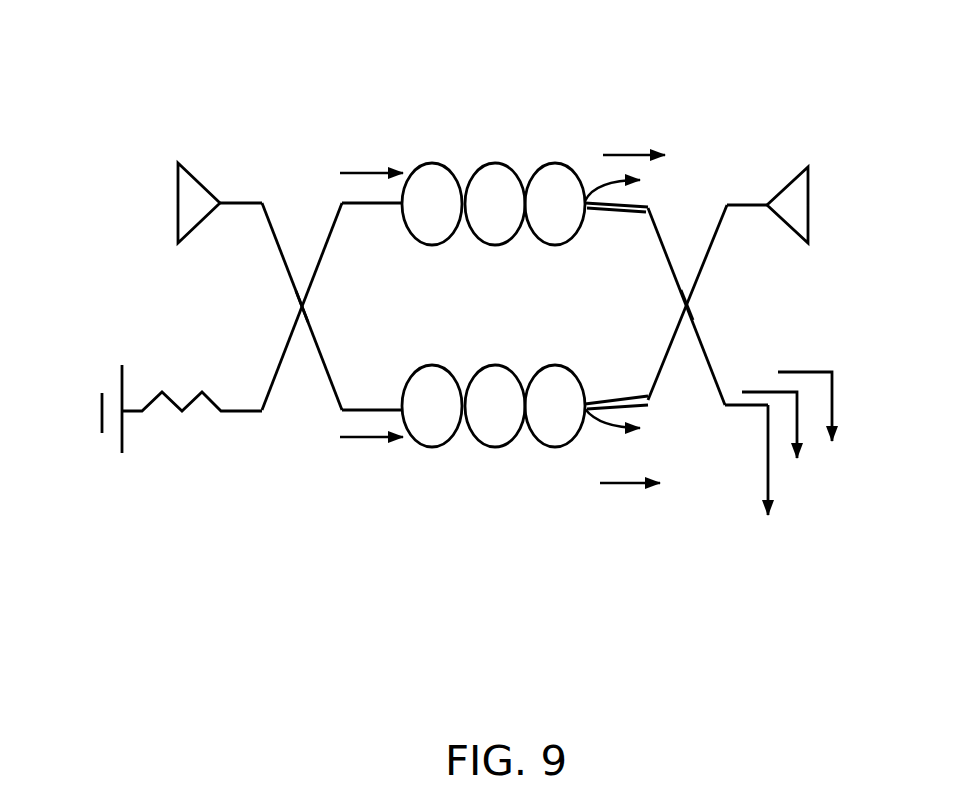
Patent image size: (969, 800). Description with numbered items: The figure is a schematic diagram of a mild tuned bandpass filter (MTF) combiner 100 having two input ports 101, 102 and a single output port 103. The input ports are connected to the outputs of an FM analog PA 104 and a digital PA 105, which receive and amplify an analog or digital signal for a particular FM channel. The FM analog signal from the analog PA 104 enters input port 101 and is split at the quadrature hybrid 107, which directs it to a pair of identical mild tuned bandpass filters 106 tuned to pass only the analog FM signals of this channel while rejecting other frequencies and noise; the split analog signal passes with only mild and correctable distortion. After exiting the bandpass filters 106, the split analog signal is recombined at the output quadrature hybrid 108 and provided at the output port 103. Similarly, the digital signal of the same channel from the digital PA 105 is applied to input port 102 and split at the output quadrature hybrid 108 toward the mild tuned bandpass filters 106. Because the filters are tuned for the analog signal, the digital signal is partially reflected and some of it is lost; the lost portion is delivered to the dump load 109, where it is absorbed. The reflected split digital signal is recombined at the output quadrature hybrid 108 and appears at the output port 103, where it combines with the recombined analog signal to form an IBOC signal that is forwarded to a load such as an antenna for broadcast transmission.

The mild tuned bandpass filter combiner 100 is at (862, 90).
The input port 101 is at (277, 240).
The input port 102 is at (703, 264).
The output port 103 is at (772, 483).
The FM analog PA 104 is at (205, 202).
The digital PA 105 is at (810, 205).
The mild tuned bandpass filters 106 is at (505, 370).
The quadrature hybrid 107 is at (307, 305).
The output quadrature hybrid 108 is at (683, 304).
The dump load 109 is at (173, 436).